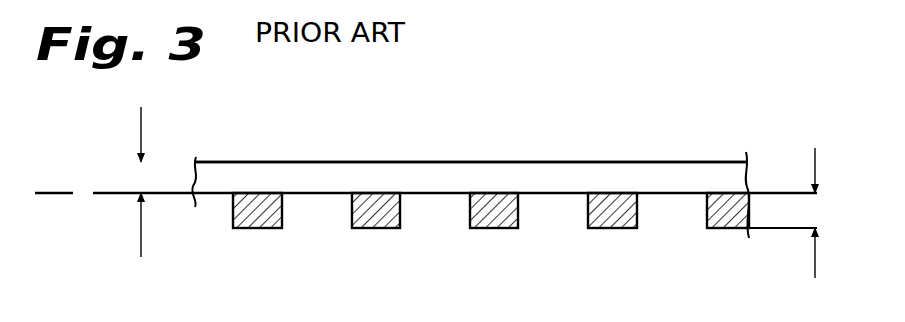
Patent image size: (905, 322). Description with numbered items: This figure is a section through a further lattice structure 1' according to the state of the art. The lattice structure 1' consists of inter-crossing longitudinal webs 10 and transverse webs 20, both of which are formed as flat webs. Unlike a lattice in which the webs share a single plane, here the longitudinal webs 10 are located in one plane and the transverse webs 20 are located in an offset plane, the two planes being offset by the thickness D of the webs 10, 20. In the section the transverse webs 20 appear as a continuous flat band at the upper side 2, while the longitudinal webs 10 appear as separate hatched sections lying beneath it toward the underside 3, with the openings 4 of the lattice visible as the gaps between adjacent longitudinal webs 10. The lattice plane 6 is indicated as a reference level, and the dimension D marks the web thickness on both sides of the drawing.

The lattice structure 1' is at (639, 83).
The upper side 2 is at (493, 162).
The transverse webs 20 is at (378, 175).
The longitudinal webs 10 is at (262, 228).
The underside 3 is at (493, 228).
The openings 4 is at (543, 205).
The lattice plane 6 is at (60, 195).
The thickness D is at (140, 178).